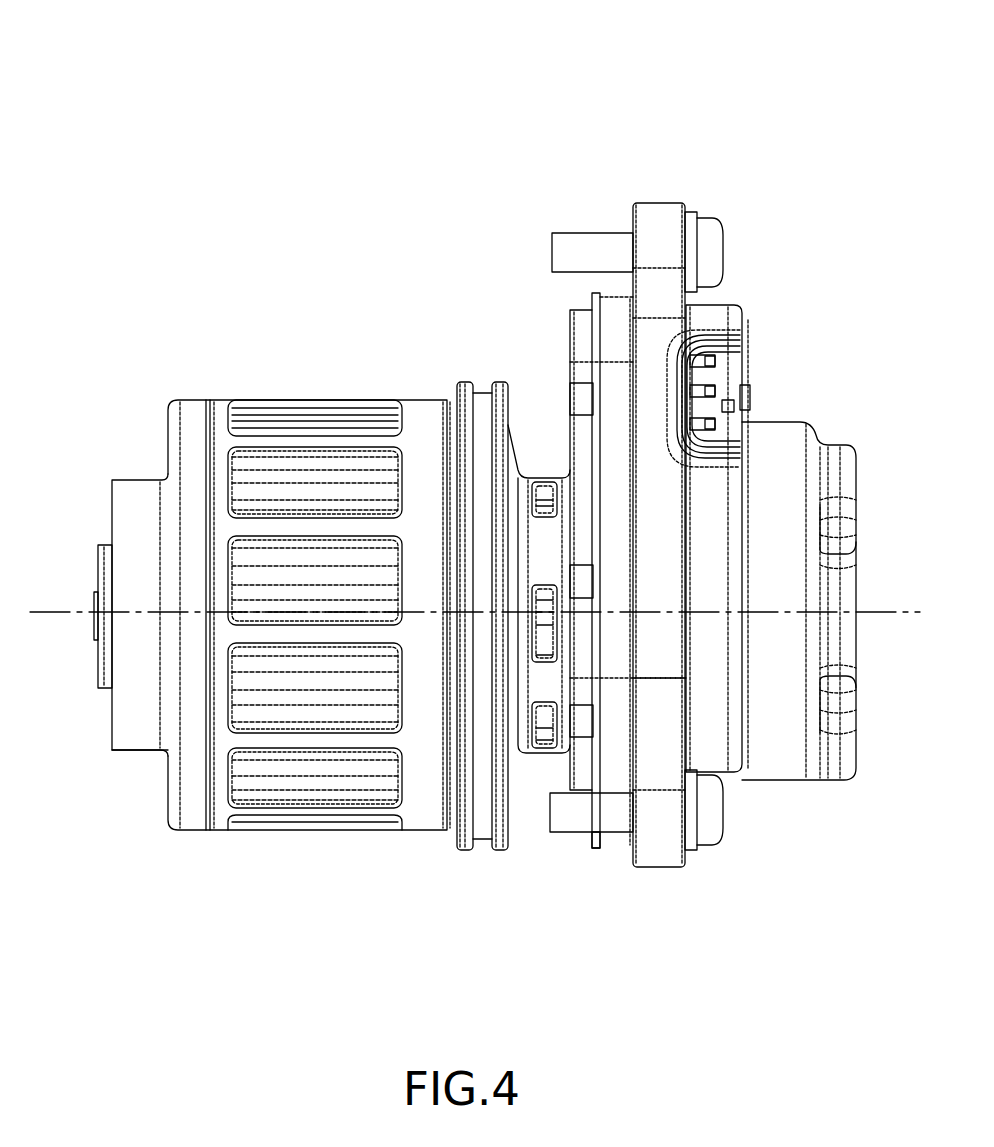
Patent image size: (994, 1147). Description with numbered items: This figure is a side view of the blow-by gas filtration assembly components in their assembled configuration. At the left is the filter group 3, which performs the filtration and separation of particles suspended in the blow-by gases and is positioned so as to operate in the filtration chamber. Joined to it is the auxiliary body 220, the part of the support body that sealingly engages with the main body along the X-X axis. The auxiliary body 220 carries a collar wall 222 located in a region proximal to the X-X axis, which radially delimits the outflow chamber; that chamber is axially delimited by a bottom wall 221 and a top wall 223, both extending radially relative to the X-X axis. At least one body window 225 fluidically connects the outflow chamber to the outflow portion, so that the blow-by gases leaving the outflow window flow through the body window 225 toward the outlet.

The filter group 3 is at (232, 348).
The auxiliary body 220 is at (783, 237).
The bottom wall 221 is at (467, 376).
The collar wall 222 is at (540, 550).
The top wall 223 is at (566, 375).
The body window 225 is at (538, 638).